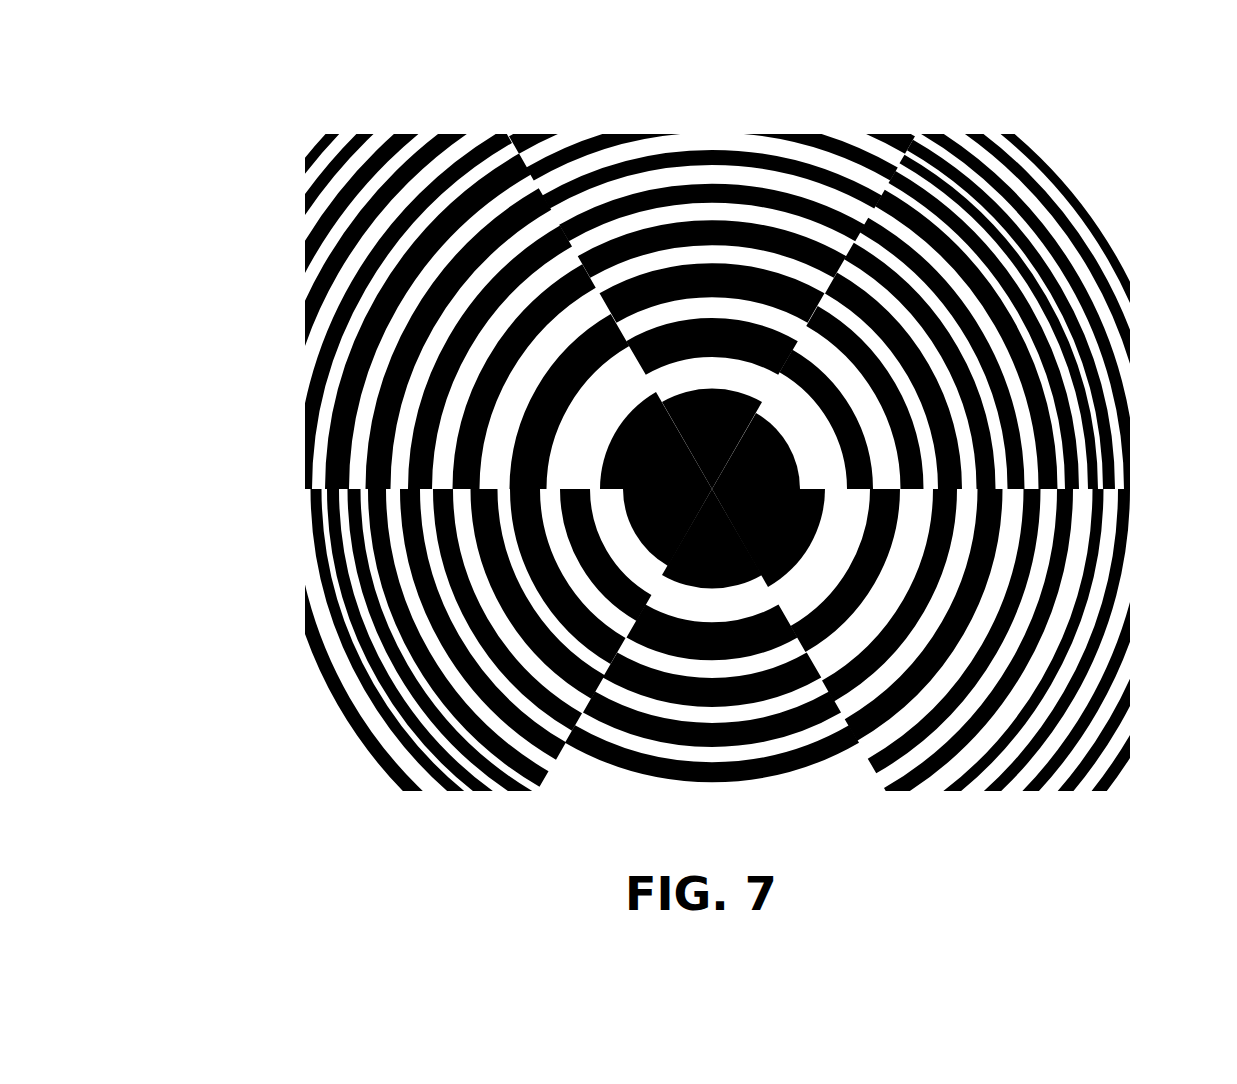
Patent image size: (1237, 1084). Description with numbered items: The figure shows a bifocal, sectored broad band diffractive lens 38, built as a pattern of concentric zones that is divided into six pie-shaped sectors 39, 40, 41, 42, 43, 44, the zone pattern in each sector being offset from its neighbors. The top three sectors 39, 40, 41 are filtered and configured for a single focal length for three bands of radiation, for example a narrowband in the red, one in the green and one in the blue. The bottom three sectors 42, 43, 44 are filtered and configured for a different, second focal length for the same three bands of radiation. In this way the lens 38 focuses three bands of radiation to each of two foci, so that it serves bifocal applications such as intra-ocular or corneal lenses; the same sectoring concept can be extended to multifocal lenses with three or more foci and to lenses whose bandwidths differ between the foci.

The bifocal sectored diffractive lens 38 is at (687, 476).
The sector 39 is at (306, 322).
The sector 40 is at (613, 134).
The sector 41 is at (1103, 232).
The sector 42 is at (1125, 614).
The sector 43 is at (715, 782).
The sector 44 is at (324, 690).